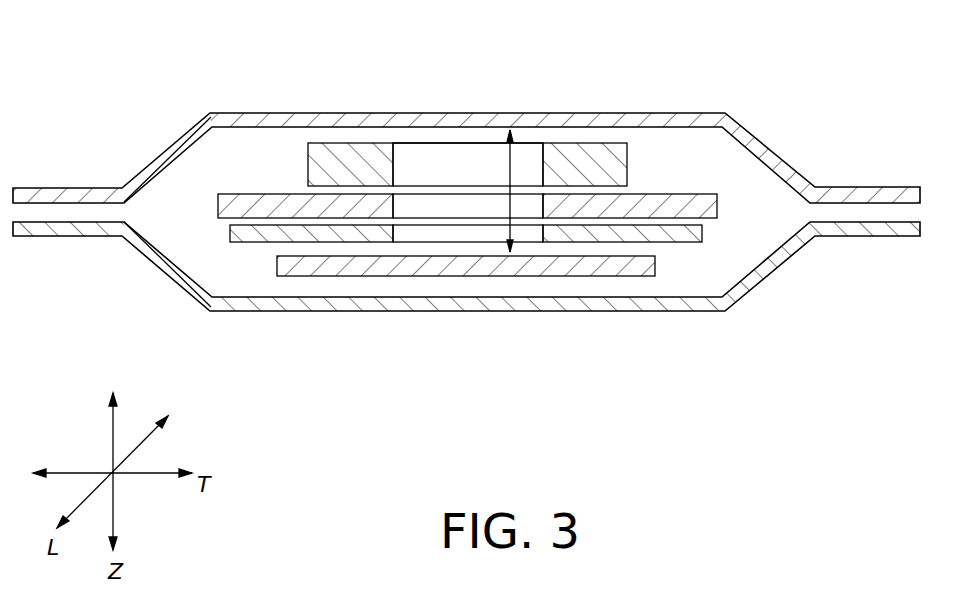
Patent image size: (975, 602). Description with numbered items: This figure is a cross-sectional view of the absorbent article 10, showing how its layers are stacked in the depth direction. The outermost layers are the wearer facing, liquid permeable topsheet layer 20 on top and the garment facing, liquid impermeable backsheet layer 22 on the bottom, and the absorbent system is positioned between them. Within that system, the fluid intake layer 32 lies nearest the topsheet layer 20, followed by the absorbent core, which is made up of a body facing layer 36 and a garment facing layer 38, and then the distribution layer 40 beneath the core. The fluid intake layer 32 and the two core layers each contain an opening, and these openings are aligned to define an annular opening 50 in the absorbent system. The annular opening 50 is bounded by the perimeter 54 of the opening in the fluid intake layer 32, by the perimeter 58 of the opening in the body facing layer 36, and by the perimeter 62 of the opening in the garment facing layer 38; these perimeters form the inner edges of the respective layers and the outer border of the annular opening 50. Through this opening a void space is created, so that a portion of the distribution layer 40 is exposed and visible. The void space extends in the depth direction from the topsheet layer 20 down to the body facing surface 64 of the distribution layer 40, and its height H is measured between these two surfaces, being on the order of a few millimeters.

The absorbent article 10 is at (137, 62).
The topsheet layer 20 is at (767, 157).
The backsheet layer 22 is at (785, 253).
The fluid intake layer 32 is at (603, 158).
The body facing layer 36 is at (260, 205).
The garment facing layer 38 is at (270, 234).
The distribution layer 40 is at (500, 268).
The annular opening 50 is at (502, 142).
The perimeter 54 is at (395, 165).
The perimeter 58 is at (445, 203).
The perimeter 62 is at (487, 178).
The body facing surface 64 is at (470, 253).
The height H is at (510, 205).